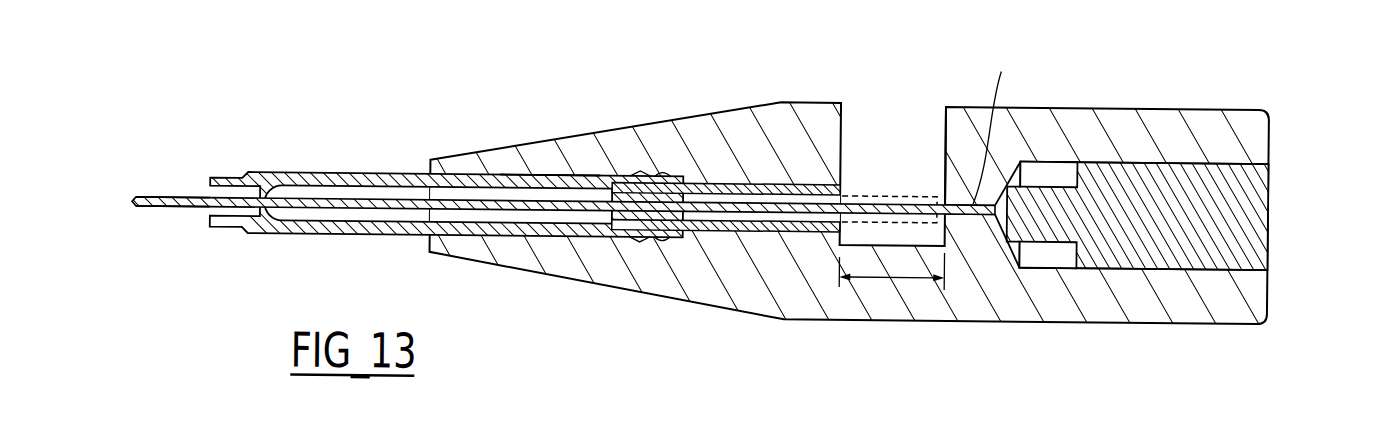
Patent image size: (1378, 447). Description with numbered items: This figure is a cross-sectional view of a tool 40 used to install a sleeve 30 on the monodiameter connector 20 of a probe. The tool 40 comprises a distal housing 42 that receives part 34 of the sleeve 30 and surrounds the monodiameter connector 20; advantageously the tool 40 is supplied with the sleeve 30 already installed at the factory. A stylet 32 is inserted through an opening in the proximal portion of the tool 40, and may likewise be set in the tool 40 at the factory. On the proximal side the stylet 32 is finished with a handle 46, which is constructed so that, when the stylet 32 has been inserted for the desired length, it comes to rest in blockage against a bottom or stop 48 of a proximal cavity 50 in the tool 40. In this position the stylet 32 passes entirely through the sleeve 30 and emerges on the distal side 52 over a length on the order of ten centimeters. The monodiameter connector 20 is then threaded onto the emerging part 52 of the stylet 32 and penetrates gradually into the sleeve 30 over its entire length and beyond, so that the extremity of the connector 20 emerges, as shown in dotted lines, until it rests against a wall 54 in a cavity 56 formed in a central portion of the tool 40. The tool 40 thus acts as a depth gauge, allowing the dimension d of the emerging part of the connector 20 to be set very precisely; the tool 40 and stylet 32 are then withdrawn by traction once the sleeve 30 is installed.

The monodiameter connector 20 is at (900, 194).
The sleeve 30 is at (387, 176).
The stylet 32 is at (868, 194).
The part of sleeve 34 is at (583, 184).
The tool 40 is at (815, 98).
The distal housing 42 is at (542, 179).
The handle 46 is at (1247, 199).
The stop 48 is at (1025, 179).
The proximal cavity 50 is at (1147, 168).
The emerging part of the stylet 52 is at (157, 202).
The wall 54 is at (941, 168).
The cavity 56 is at (888, 106).